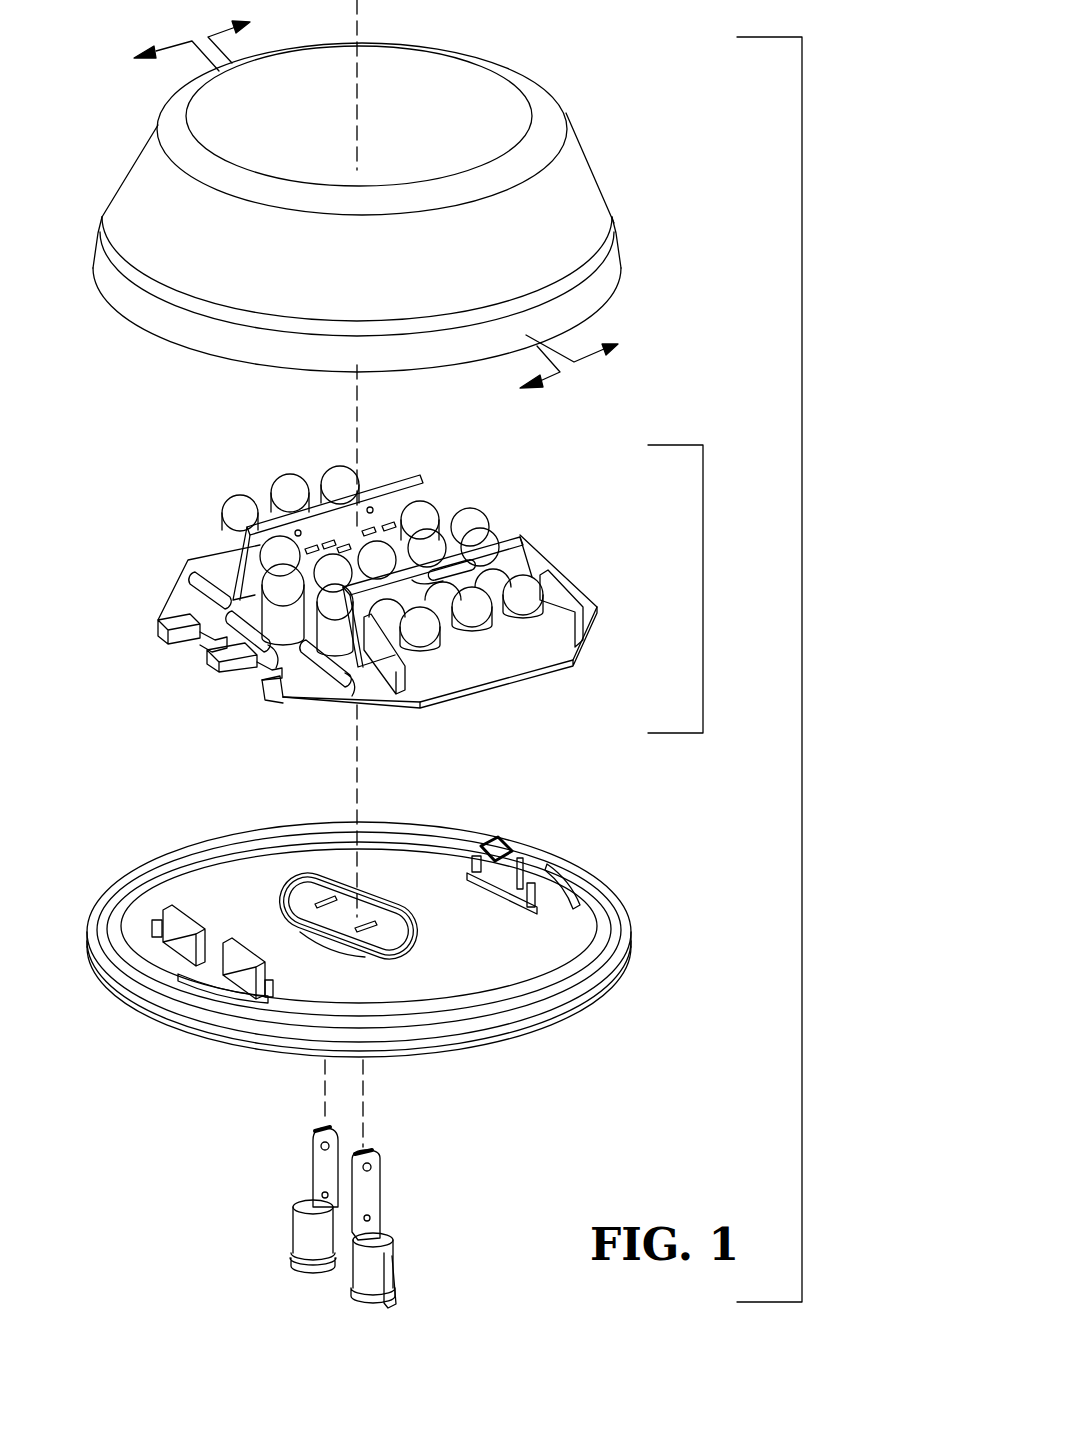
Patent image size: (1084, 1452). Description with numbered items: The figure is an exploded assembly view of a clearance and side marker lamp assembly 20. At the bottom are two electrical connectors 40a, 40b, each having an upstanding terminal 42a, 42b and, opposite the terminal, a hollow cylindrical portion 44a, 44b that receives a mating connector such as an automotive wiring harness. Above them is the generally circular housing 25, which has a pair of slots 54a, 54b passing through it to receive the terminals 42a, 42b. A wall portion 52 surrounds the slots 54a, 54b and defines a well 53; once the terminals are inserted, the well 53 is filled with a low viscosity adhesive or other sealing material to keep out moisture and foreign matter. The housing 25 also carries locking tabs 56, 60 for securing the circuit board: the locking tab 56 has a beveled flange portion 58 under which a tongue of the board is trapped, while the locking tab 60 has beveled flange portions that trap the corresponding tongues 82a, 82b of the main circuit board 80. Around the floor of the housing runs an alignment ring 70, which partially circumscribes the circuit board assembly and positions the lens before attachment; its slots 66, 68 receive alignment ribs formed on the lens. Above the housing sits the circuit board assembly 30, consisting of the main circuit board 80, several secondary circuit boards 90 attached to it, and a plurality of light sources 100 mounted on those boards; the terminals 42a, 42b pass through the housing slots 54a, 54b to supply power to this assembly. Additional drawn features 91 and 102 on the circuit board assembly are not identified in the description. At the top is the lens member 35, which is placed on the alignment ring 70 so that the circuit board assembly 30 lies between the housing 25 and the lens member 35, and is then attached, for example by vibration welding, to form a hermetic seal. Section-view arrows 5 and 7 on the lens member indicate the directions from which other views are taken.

The section line 5- 5 is at (335, 224).
The section line 7- 7 is at (425, 185).
The lamp assembly 20 is at (802, 708).
The housing 25 is at (632, 918).
The circuit board assembly 30 is at (703, 597).
The lens member 35 is at (593, 167).
The electrical connector 40a is at (270, 1258).
The electrical connector 40b is at (425, 1285).
The terminal 42a is at (312, 1145).
The terminal 42b is at (380, 1168).
The hollow cylindrical portion 44a is at (313, 1270).
The hollow cylindrical portion 44b is at (393, 1303).
The wall portion 52 is at (354, 864).
The well 53 is at (310, 930).
The slot 54a is at (337, 900).
The slot 54b is at (373, 922).
The locking tab 56 is at (503, 877).
The beveled flange portion 58 is at (502, 867).
The locking tab 60 is at (183, 930).
The slot 66 is at (180, 990).
The slot 68 is at (548, 864).
The alignment ring 70 is at (565, 968).
The main circuit board 80 is at (550, 668).
The tongue 82a is at (193, 648).
The tongue 82b is at (257, 673).
The secondary circuit board 90 is at (414, 552).
The bracket face 91 is at (510, 557).
The light source 100 is at (275, 487).
The resistor 102 is at (310, 670).